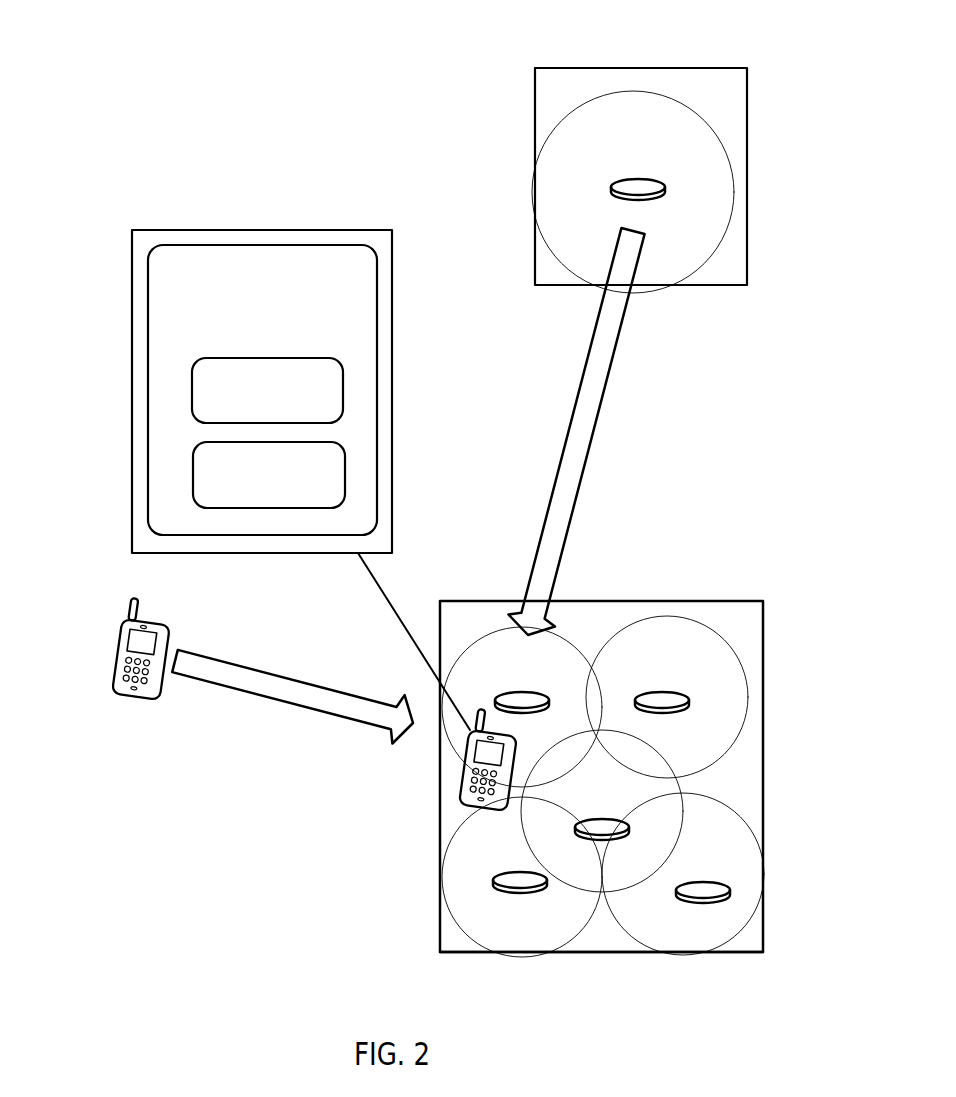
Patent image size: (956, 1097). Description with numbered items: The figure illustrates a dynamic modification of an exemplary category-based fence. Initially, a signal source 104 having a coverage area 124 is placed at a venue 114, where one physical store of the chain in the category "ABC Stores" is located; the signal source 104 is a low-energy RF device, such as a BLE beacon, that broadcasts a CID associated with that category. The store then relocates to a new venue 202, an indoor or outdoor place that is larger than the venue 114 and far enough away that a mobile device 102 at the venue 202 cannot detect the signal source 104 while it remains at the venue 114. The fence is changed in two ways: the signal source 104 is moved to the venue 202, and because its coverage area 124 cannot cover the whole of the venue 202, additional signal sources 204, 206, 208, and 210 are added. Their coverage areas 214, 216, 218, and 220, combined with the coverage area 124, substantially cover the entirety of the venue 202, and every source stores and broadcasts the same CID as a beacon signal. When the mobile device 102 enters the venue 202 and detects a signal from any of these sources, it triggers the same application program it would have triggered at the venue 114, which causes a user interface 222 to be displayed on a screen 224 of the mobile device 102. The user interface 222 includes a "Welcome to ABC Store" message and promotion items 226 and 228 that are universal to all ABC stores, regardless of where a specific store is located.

The mobile device 102 is at (115, 625).
The signal source 104 is at (612, 190).
The venue 114 is at (700, 68).
The coverage area 124 is at (590, 98).
The new venue 202 is at (640, 601).
The signal source 204 is at (493, 878).
The signal source 206 is at (688, 700).
The signal source 208 is at (607, 812).
The signal source 210 is at (732, 892).
The coverage area 214 is at (470, 938).
The coverage area 216 is at (693, 618).
The coverage area 218 is at (683, 810).
The coverage area 220 is at (682, 952).
The user interface 222 is at (212, 243).
The screen 224 is at (357, 230).
The promotion item 226 is at (192, 410).
The promotion item 228 is at (193, 475).